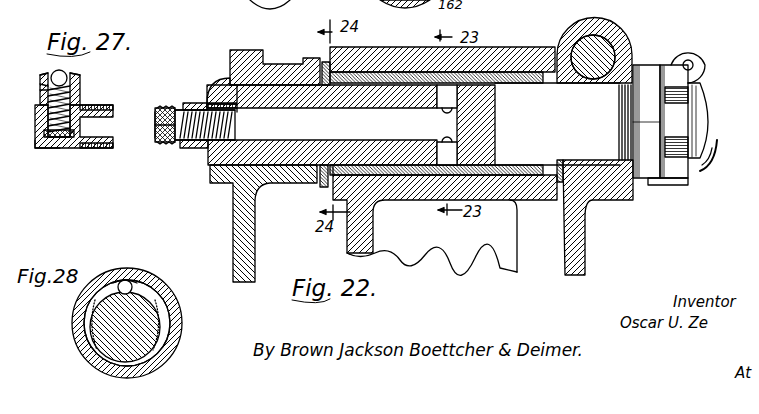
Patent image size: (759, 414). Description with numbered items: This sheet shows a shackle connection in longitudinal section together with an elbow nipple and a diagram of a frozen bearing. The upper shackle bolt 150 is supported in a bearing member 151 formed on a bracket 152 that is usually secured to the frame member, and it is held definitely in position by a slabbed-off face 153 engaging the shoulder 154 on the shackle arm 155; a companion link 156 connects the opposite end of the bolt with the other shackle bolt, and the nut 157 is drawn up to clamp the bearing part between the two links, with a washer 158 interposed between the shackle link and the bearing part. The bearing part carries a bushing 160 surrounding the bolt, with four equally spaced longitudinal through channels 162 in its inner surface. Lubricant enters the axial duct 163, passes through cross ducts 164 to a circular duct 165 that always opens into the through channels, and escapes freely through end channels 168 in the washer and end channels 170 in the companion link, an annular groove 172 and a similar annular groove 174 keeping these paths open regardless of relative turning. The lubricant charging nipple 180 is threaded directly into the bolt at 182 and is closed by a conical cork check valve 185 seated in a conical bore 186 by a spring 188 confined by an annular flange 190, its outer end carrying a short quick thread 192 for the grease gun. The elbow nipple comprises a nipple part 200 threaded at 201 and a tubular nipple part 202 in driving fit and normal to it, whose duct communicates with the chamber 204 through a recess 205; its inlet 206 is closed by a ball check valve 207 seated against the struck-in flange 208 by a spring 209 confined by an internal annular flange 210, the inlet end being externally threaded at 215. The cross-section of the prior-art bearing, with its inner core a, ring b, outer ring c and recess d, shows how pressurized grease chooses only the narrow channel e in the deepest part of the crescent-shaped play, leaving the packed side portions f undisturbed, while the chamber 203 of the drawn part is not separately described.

In FIG. 22, the shackle bolt 150 is at (494, 47).
In FIG. 22, the bearing member 151 is at (492, 198).
In FIG. 22, the bracket 152 is at (372, 240).
In FIG. 22, the slabbed-off face 153 is at (227, 175).
In FIG. 22, the shoulder 154 is at (222, 160).
In FIG. 22, the shackle arm 155 is at (256, 239).
In FIG. 22, the companion link 156 is at (578, 245).
In FIG. 22, the nut 157 is at (645, 72).
In FIG. 22, the washer 158 is at (321, 63).
In FIG. 22, the bushing 160 is at (387, 47).
In FIG. 22, the longitudinal through channels 162 is at (426, 46).
In FIG. 22, the axial duct 163 is at (224, 70).
In FIG. 22, the cross ducts 164 is at (443, 137).
In FIG. 22, the circular duct 165 is at (449, 168).
In FIG. 22, the free lubricant escape end channels 168 is at (333, 190).
In FIG. 22, the end channels 170 is at (561, 183).
In FIG. 22, the annular groove 172 is at (330, 45).
In FIG. 22, the annular groove 174 is at (562, 84).
In FIG. 22, the lubricant charging nipple 180 is at (154, 148).
In FIG. 22, the threaded connection 182 is at (212, 98).
In FIG. 22, the conical cork check valve 185 is at (157, 128).
In FIG. 22, the conical bore 186 is at (158, 108).
In FIG. 22, the spring 188 is at (188, 147).
In FIG. 22, the annular flange 190 is at (247, 110).
In FIG. 22, the quick thread 192 is at (167, 147).
In FIG. 27, the nipple part 200 is at (90, 148).
In FIG. 27, the thread 201 is at (113, 108).
In FIG. 27, the tubular nipple part 202 is at (78, 82).
In FIG. 27, the spring chamber 203 is at (78, 101).
In FIG. 22, the chamber 204 is at (154, 135).
In FIG. 27, the recess 205 is at (62, 140).
In FIG. 27, the inlet opening 206 is at (60, 72).
In FIG. 27, the ball check valve 207 is at (66, 80).
In FIG. 27, the struck-in flange 208 is at (50, 88).
In FIG. 27, the spring 209 is at (48, 93).
In FIG. 27, the internal annular flange 210 is at (45, 148).
In FIG. 27, the external thread 215 is at (82, 88).
In FIG. 28, the core a is at (142, 309).
In FIG. 28, the inner ring b is at (150, 278).
In FIG. 28, the outer ring c is at (150, 373).
In FIG. 28, the recess d is at (101, 283).
In FIG. 28, the narrow channel e is at (133, 280).
In FIG. 28, the side portions f is at (87, 313).